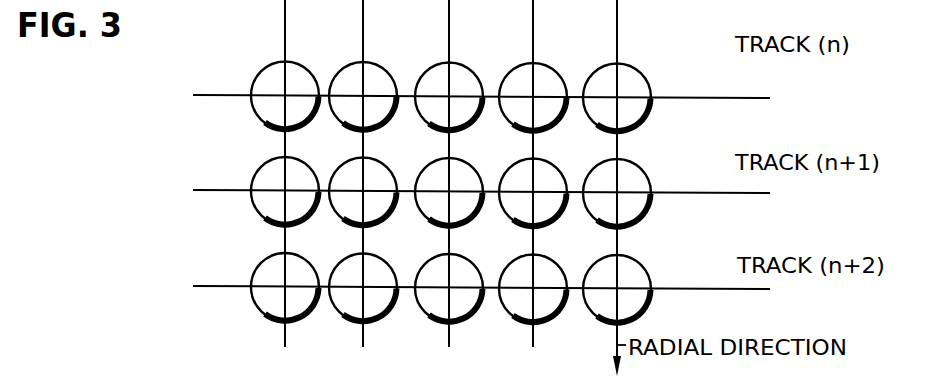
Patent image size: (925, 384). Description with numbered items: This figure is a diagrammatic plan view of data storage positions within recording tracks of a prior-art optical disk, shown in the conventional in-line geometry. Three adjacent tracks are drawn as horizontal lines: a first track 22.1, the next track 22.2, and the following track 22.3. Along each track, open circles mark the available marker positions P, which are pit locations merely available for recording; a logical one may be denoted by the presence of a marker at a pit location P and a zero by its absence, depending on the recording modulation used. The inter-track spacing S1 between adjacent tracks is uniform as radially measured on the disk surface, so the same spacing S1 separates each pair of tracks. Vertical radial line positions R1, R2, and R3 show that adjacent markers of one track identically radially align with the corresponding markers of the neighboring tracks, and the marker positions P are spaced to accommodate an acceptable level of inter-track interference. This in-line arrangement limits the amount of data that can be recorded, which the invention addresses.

The Track n 22.1 is at (734, 98).
The Track n+1 22.2 is at (734, 193).
The Track n+2 22.3 is at (734, 289).
The marker position P is at (262, 59).
The radial line position R1 is at (449, 20).
The radial line position R2 is at (533, 20).
The radial line position R3 is at (617, 22).
The inter-track spacing S1 is at (209, 99).